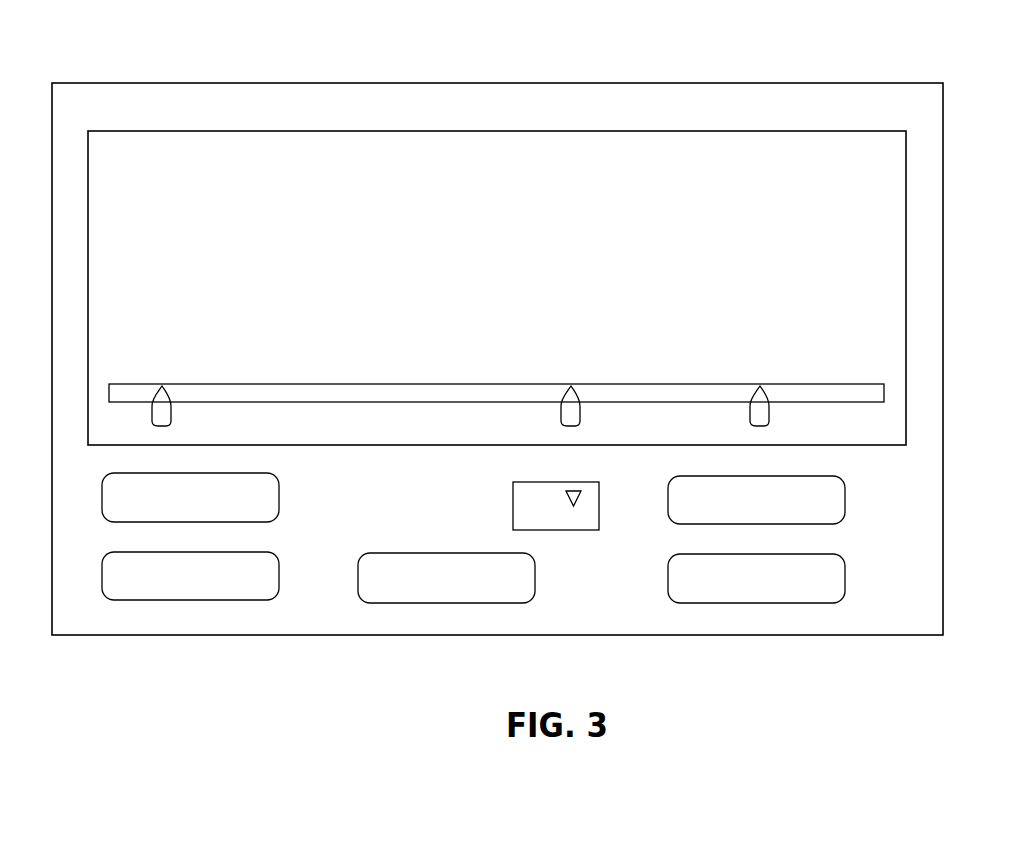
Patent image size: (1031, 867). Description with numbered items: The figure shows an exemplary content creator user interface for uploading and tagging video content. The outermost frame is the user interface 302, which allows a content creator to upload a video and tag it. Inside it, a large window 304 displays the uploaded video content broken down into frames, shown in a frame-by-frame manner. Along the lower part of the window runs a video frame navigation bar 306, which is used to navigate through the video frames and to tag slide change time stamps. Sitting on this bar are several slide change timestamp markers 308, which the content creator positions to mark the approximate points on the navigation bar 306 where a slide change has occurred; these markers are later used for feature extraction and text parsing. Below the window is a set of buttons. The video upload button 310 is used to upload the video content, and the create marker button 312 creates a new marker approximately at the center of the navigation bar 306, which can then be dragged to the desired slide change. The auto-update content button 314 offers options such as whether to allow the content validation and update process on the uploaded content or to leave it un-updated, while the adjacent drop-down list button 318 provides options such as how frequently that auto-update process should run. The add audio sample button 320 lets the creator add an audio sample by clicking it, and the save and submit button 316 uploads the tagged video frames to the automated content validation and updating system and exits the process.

The user interface 302 is at (944, 132).
The window 304 is at (906, 207).
The video frame navigation bar 306 is at (884, 393).
The slide change timestamp markers 308 is at (167, 396).
The video upload button 310 is at (279, 492).
The create marker button 312 is at (279, 572).
The auto-update content button 314 is at (845, 494).
The save and submit button 316 is at (845, 578).
The drop-down list button 318 is at (600, 494).
The add audio sample button 320 is at (535, 578).